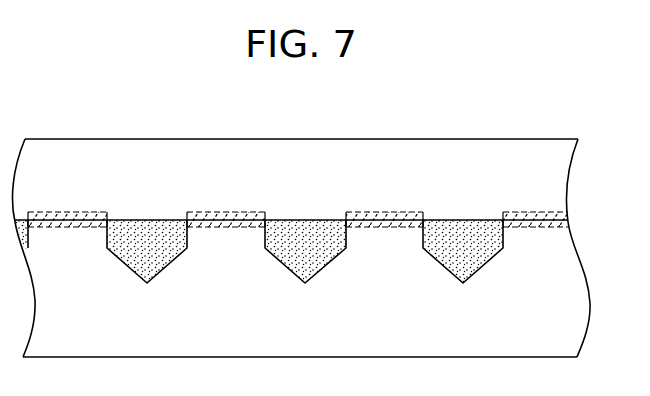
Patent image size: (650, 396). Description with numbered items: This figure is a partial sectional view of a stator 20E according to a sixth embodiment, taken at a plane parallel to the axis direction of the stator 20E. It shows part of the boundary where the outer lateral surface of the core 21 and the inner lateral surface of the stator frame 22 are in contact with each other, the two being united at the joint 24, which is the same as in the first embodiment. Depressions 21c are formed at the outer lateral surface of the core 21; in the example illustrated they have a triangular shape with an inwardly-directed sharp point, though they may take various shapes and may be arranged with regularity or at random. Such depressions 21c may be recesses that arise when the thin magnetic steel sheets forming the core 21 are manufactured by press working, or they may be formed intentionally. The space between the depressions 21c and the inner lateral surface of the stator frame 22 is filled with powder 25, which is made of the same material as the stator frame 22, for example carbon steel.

The stator 20E is at (519, 112).
The core 21 is at (563, 301).
The depressions 21c is at (127, 272).
The stator frame 22 is at (555, 188).
The joint 24 is at (382, 212).
The powder 25 is at (160, 221).